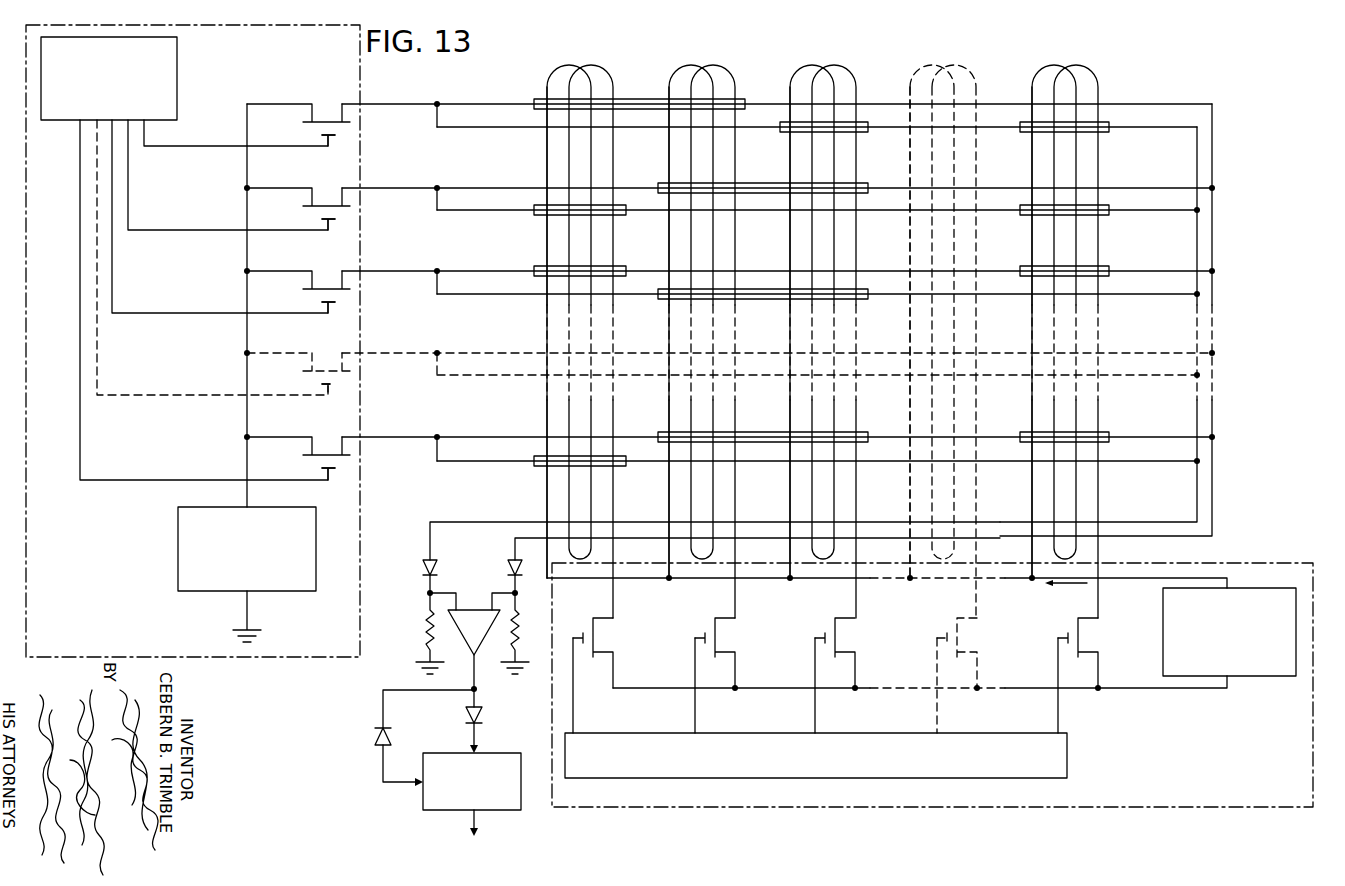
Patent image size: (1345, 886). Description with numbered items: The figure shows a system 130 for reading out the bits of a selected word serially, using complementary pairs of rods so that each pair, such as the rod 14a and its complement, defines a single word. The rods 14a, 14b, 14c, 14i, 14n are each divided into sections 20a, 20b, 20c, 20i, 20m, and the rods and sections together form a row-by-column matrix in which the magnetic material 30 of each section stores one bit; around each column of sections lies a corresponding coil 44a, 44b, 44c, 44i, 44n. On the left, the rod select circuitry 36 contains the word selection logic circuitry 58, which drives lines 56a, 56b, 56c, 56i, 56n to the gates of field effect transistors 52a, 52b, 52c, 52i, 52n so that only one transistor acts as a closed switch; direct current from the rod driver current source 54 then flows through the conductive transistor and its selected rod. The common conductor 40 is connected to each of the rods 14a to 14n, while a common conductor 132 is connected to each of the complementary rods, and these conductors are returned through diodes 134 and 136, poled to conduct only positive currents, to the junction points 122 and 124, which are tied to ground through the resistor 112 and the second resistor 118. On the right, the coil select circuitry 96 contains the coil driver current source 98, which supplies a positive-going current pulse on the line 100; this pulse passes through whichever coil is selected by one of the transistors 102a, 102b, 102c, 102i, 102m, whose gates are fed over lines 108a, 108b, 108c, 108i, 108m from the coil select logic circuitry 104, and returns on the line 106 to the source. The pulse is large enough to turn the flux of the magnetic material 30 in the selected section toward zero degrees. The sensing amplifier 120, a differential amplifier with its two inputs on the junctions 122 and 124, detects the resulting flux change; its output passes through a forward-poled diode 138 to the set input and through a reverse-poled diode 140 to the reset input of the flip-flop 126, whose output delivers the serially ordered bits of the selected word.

The rod select circuitry 36 is at (280, 657).
The word selection logic circuitry 58 is at (177, 85).
The line 56a is at (147, 133).
The line 56b is at (130, 201).
The line 56c is at (113, 296).
The line 56i is at (98, 373).
The line 56n is at (82, 460).
The field effect transistor 52a is at (323, 104).
The field effect transistor 52b is at (323, 188).
The field effect transistor 52c is at (323, 271).
The field effect transistor 52i is at (323, 353).
The field effect transistor 52n is at (323, 437).
The rod driver current source 54 is at (178, 528).
The system 130 is at (432, 93).
The rod 14a is at (1148, 96).
The rod 14b is at (1160, 180).
The rod 14c is at (1146, 262).
The rod 14i is at (1145, 346).
The rod 14n is at (1148, 430).
The common conductor 40 is at (1142, 534).
The section 20a is at (595, 65).
The section 20b is at (717, 65).
The section 20c is at (838, 65).
The section 20i is at (956, 65).
The section 20m is at (1085, 65).
The magnetic material 30 is at (651, 102).
The coil 44a is at (615, 235).
The coil 44b is at (737, 235).
The coil 44c is at (856, 235).
The coil 44i is at (983, 235).
The coil 44n is at (1100, 292).
The coil select circuitry 96 is at (1282, 564).
The line 100 is at (1212, 574).
The coil driver current source 98 is at (1272, 678).
The line 106 is at (1178, 688).
The transistor 102a is at (610, 636).
The transistor 102b is at (732, 636).
The transistor 102c is at (852, 636).
The transistor 102i is at (970, 636).
The transistor 102m is at (1090, 636).
The coil select gate line 108a is at (575, 702).
The coil select gate line 108b is at (697, 702).
The coil select gate line 108c is at (817, 702).
The coil select gate line 108i is at (939, 702).
The coil select gate line 108m is at (1060, 712).
The coil select logic circuitry 104 is at (1068, 754).
The common conductor 132 is at (460, 520).
The diode 134 is at (518, 558).
The diode 136 is at (425, 562).
The junction point 122 is at (511, 586).
The junction point 124 is at (428, 592).
The second resistor 118 is at (428, 632).
The resistor 112 is at (523, 632).
The sensing amplifier 120 is at (469, 612).
The forward-poled diode 138 is at (480, 713).
The reverse-poled diode 140 is at (375, 740).
The flip-flop 126 is at (505, 812).